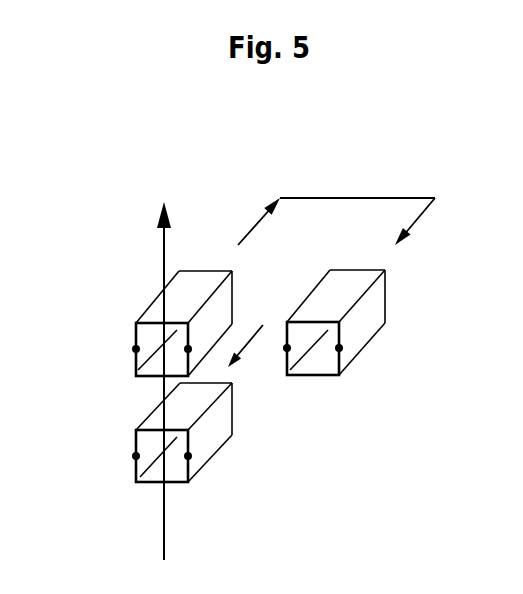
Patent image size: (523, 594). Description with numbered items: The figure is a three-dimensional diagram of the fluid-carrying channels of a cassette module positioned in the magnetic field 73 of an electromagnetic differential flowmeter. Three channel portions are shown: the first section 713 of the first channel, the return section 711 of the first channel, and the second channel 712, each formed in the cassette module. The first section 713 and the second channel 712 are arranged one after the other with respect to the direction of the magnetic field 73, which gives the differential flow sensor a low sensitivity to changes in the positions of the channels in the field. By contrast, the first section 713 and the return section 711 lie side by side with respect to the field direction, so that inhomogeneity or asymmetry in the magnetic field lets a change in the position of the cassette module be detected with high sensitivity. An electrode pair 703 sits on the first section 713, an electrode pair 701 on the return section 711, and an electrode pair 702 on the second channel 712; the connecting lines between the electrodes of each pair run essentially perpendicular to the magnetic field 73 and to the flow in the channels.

The magnetic field 73 is at (164, 529).
The first section of the first channel 713 is at (152, 320).
The electrode pair 703 is at (188, 349).
The second channel 712 is at (158, 430).
The electrode pair 702 is at (188, 456).
The return section of the first channel 711 is at (339, 348).
The electrode pair 701 is at (287, 348).